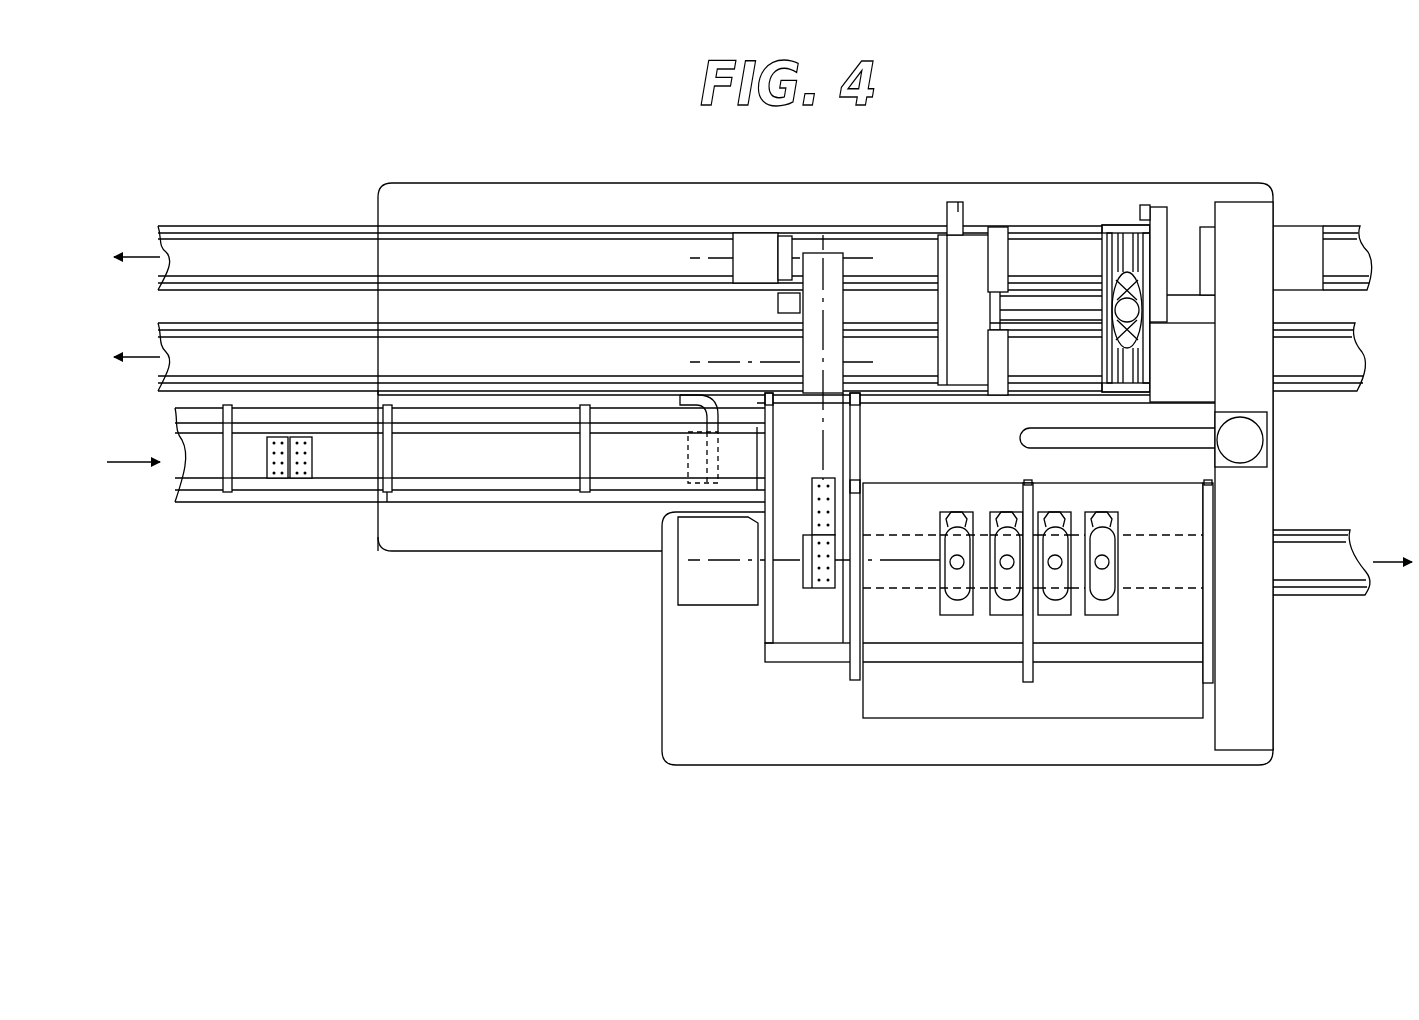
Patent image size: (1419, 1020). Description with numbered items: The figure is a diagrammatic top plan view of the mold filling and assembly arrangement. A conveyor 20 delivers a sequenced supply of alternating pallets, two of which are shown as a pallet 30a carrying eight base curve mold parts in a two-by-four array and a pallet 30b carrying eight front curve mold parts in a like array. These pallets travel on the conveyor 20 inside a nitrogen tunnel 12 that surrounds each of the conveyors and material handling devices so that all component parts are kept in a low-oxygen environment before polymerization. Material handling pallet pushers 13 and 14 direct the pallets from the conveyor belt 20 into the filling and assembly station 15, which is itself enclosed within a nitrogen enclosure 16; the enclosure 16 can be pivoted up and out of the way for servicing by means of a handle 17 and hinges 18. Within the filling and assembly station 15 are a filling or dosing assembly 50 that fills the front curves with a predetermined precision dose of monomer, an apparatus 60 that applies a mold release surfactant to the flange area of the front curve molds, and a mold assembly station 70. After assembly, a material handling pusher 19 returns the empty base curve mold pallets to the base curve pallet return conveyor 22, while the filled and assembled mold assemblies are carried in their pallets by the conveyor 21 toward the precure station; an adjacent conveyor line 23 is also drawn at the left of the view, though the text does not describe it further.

The nitrogen tunnel 12 is at (238, 224).
The pallet pusher 13 is at (818, 434).
The pallet pusher 14 is at (741, 564).
The filling and assembly station 15 is at (1042, 772).
The nitrogen enclosure 16 is at (968, 644).
The handle 17 is at (1110, 653).
The hinges 18 is at (866, 479).
The material handling pusher 19 is at (1212, 738).
The conveyor 20 is at (168, 478).
The conveyor 21 is at (1322, 555).
The base curve pallet return conveyor 22 is at (168, 365).
The first conveyor line 23 is at (170, 265).
The pallet 30a is at (298, 480).
The pallet 30b is at (282, 480).
The filling or dosing assembly 50 is at (955, 570).
The surfactant applying apparatus 60 is at (1055, 512).
The mold assembly station 70 is at (1103, 512).